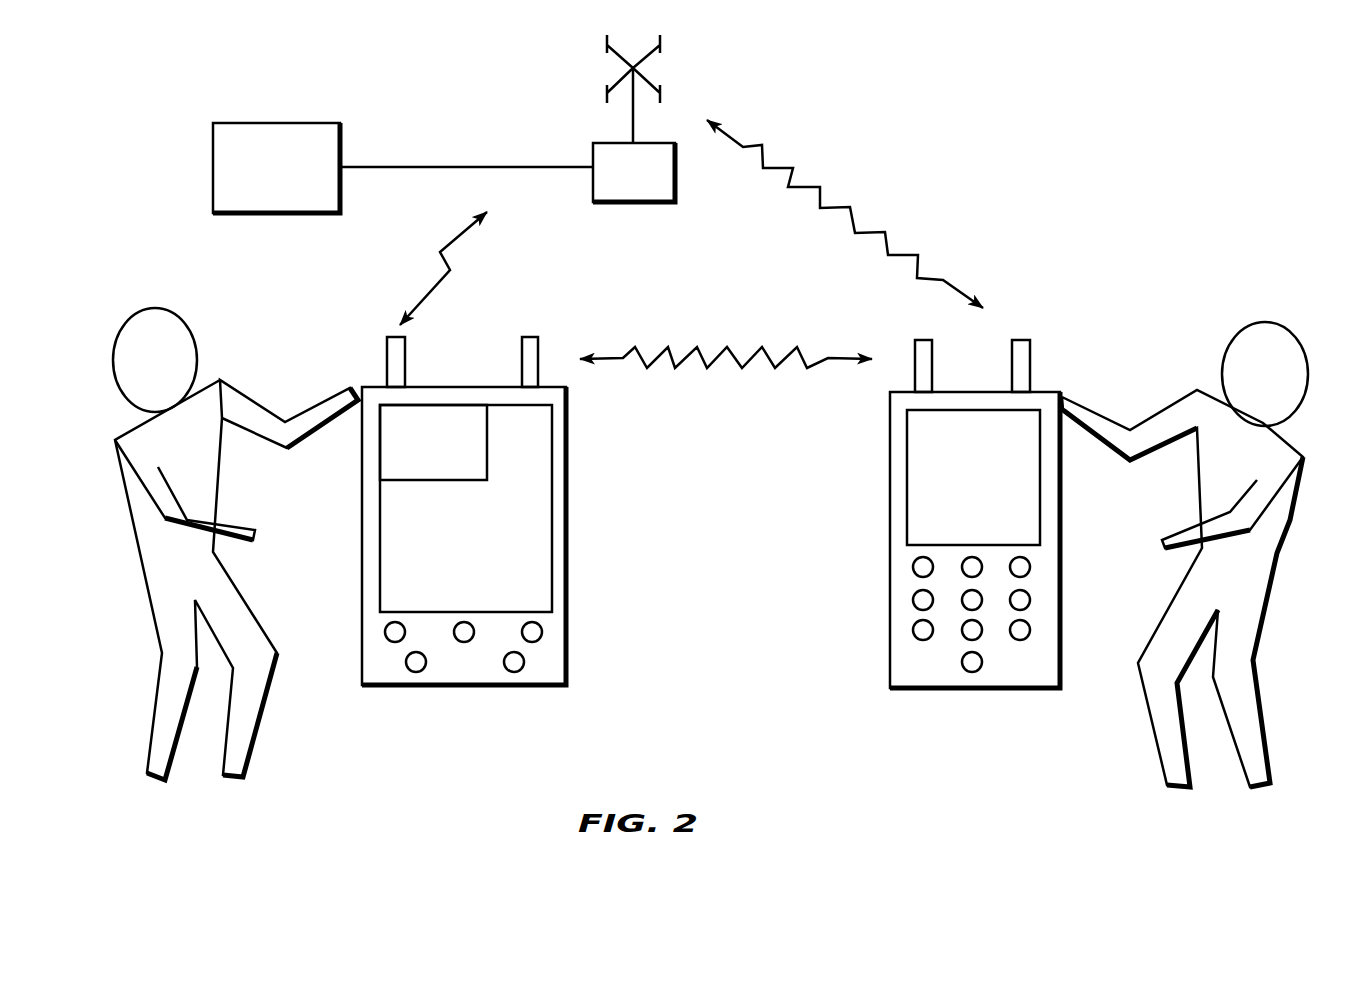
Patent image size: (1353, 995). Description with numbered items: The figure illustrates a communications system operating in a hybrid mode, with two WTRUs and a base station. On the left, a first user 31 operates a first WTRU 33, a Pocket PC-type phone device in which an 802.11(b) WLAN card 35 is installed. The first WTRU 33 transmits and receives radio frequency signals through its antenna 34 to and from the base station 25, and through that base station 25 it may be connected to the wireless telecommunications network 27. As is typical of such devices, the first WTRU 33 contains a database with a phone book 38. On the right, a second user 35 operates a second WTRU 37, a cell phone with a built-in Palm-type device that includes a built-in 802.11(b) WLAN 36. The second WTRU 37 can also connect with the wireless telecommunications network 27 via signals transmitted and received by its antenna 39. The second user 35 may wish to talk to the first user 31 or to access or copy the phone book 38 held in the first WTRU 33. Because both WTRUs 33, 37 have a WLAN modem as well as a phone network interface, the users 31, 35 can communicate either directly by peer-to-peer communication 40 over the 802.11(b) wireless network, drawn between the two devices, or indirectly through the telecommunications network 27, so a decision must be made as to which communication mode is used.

The base station 25 is at (593, 143).
The wireless telecommunications network 27 is at (262, 176).
The first user 31 is at (240, 590).
The first WTRU 33 is at (486, 499).
The antenna 34 is at (390, 345).
The 802.11(b) WLAN card / second user 35 is at (538, 342).
The built-in 802.11(b) WLAN 36 is at (915, 350).
The second WTRU 37 is at (975, 525).
The phone book 38 is at (488, 460).
The antenna 39 is at (1030, 345).
The peer-to-peer communication 40 is at (678, 357).